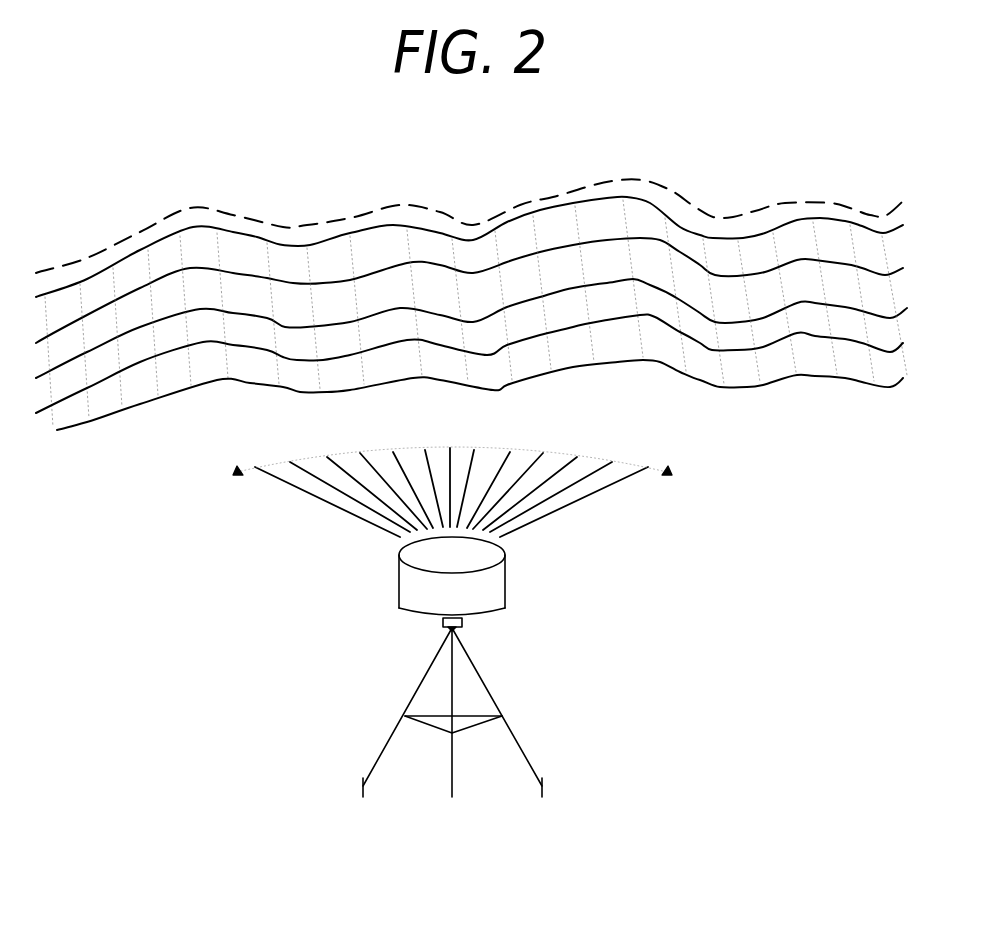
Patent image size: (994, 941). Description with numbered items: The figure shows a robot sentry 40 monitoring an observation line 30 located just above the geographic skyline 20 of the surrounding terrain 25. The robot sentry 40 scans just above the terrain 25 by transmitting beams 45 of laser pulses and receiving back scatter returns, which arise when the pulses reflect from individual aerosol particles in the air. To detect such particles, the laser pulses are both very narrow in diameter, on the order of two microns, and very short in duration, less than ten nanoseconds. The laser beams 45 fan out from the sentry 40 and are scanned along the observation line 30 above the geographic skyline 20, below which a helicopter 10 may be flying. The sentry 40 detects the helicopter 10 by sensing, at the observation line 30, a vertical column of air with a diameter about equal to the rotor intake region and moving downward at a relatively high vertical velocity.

The helicopter 10 is at (328, 198).
The geographic skyline 20 is at (633, 198).
The observation line 30 is at (518, 200).
The surrounding terrain 25 is at (758, 358).
The robot sentry 40 is at (505, 573).
The beams 45 is at (600, 492).